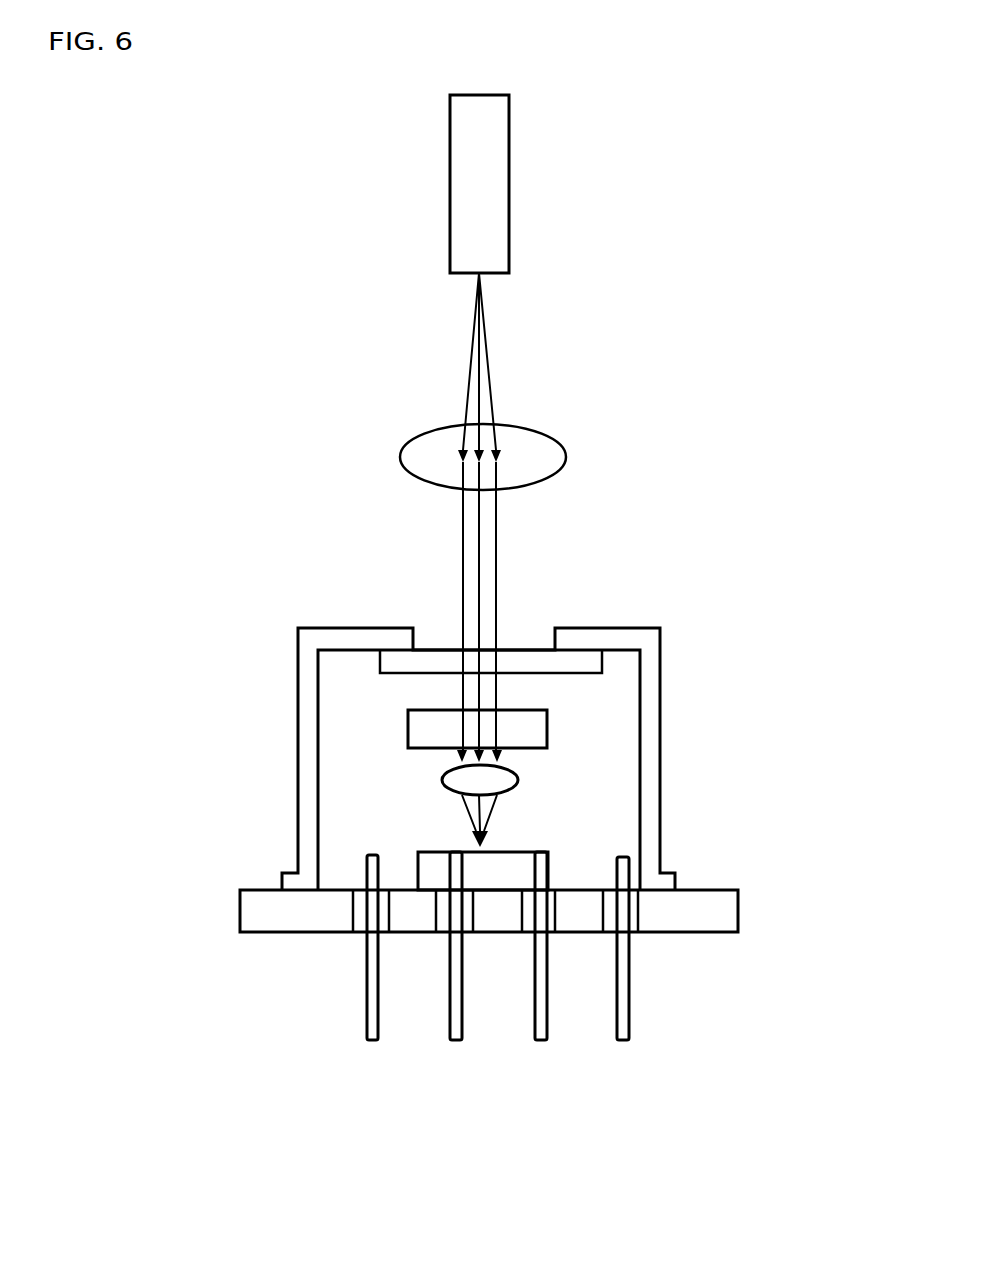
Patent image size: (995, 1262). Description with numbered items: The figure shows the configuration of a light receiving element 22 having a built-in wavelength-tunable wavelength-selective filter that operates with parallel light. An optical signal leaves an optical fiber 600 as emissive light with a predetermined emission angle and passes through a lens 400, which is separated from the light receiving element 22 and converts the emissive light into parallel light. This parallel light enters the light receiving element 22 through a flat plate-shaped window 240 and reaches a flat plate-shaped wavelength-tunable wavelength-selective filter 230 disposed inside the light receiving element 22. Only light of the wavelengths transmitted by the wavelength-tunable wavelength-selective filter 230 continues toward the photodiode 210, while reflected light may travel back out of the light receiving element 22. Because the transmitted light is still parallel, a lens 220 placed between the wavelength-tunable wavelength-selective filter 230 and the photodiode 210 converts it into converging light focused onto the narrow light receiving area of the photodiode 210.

The optical fiber 600 is at (517, 255).
The lens 400 is at (557, 455).
The window 240 is at (530, 645).
The wavelength-tunable wavelength-selective filter 230 is at (533, 727).
The lens 220 is at (527, 782).
The photodiode 210 is at (553, 864).
The light receiving element 22 is at (297, 752).